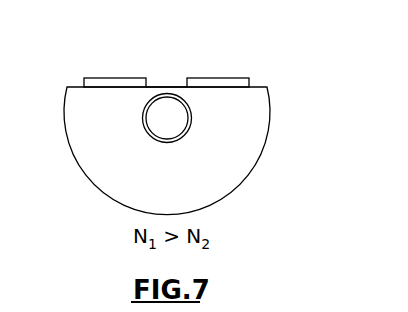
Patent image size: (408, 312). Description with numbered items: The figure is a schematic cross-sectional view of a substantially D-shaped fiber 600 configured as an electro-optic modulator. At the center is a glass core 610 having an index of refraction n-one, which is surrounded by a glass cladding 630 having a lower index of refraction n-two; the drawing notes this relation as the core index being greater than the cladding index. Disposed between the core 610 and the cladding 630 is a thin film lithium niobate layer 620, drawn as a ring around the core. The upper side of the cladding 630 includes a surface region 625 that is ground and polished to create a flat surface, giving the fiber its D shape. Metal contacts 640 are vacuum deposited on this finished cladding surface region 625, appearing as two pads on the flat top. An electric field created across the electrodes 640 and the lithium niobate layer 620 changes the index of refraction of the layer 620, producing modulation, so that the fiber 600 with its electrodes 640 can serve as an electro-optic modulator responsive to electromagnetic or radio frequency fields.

The substantially D-shaped fiber 600 is at (199, 115).
The glass core 610 is at (148, 112).
The thin film lithium niobate layer 620 is at (192, 123).
The surface region 625 is at (168, 87).
The glass cladding 630 is at (121, 174).
The metal contacts 640 is at (106, 78).